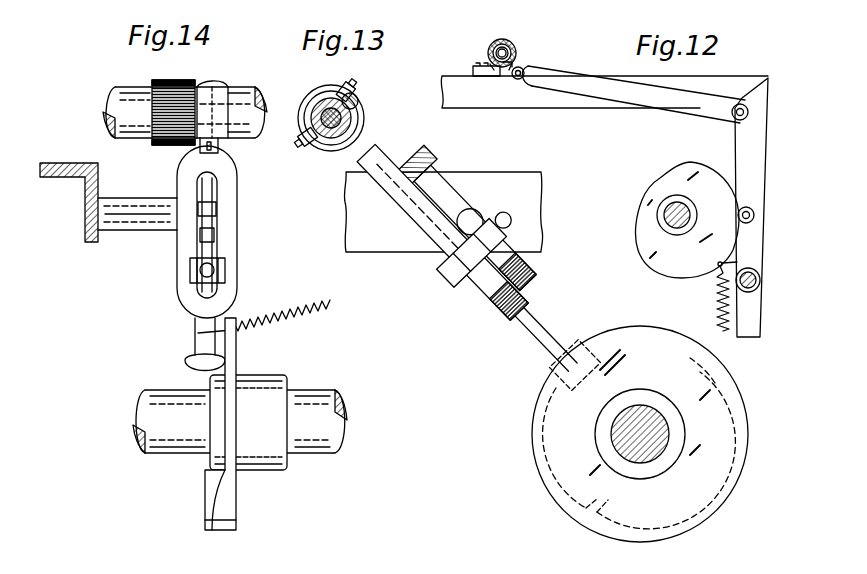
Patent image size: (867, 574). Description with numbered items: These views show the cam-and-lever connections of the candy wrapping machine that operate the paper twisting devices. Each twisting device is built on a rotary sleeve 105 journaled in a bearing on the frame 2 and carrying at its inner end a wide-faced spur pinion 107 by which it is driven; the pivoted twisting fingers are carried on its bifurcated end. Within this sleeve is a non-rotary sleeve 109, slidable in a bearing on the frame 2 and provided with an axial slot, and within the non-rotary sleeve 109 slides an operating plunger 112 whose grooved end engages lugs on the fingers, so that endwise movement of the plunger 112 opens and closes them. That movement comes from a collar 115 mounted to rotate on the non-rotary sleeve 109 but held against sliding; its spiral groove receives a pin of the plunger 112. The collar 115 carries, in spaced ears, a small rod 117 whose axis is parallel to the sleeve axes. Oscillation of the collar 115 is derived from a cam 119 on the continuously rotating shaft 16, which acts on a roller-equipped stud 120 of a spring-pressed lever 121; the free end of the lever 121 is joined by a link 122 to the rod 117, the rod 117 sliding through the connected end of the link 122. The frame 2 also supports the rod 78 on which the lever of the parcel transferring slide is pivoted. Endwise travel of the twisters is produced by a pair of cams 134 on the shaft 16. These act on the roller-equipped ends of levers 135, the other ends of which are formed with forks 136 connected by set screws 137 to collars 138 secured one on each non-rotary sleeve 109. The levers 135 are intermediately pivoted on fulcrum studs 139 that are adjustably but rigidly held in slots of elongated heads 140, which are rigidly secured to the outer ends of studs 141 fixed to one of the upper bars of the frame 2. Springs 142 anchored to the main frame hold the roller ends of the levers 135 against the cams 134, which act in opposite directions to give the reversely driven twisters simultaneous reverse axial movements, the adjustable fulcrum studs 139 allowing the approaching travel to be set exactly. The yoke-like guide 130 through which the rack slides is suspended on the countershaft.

In FIG. 12, the frame 2 is at (604, 92).
In FIG. 13, the frame 2 is at (443, 212).
In FIG. 14, the frame 2 is at (85, 200).
In FIG. 12, the shaft 16 is at (668, 216).
In FIG. 14, the shaft 16 is at (300, 410).
In FIG. 12, the rod 78 is at (761, 283).
In FIG. 14, the sleeve 105 is at (118, 106).
In FIG. 14, the spur pinion 107 is at (160, 80).
In FIG. 12, the non-rotary sleeve 109 is at (508, 44).
In FIG. 13, the non-rotary sleeve 109 is at (343, 119).
In FIG. 12, the operating plunger 112 is at (512, 48).
In FIG. 13, the operating plunger 112 is at (355, 103).
In FIG. 12, the collar 115 is at (500, 40).
In FIG. 12, the rod 117 is at (528, 70).
In FIG. 12, the cam 119 is at (645, 244).
In FIG. 12, the roller-equipped stud 120 is at (755, 210).
In FIG. 12, the spring-pressed lever 121 is at (752, 150).
In FIG. 12, the link 122 is at (690, 109).
In FIG. 14, the yoke-like guide 130 is at (222, 84).
In FIG. 12, the cams 134 is at (644, 478).
In FIG. 14, the cams 134 is at (232, 505).
In FIG. 13, the levers 135 is at (497, 296).
In FIG. 14, the levers 135 is at (190, 296).
In FIG. 13, the forks 136 is at (363, 115).
In FIG. 14, the forks 136 is at (202, 145).
In FIG. 13, the set screws 137 is at (364, 82).
In FIG. 14, the set screws 137 is at (205, 152).
In FIG. 13, the collars 138 is at (324, 100).
In FIG. 14, the collars 138 is at (192, 80).
In FIG. 13, the fulcrum studs 139 is at (449, 272).
In FIG. 14, the fulcrum studs 139 is at (190, 272).
In FIG. 13, the elongated heads 140 is at (440, 168).
In FIG. 13, the studs 141 is at (480, 210).
In FIG. 14, the studs 141 is at (145, 231).
In FIG. 14, the springs 142 is at (302, 330).